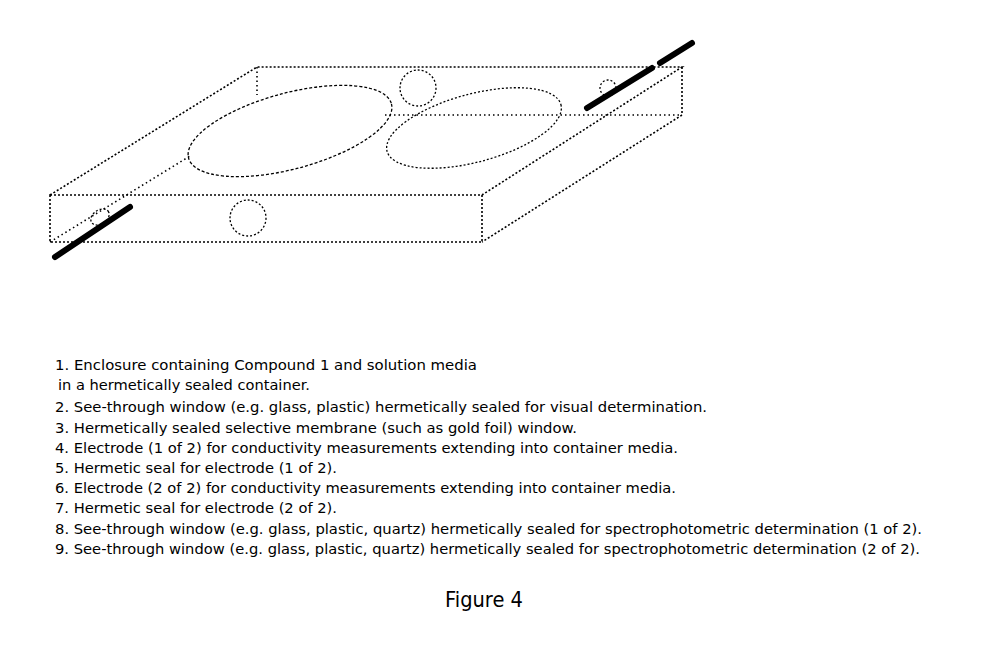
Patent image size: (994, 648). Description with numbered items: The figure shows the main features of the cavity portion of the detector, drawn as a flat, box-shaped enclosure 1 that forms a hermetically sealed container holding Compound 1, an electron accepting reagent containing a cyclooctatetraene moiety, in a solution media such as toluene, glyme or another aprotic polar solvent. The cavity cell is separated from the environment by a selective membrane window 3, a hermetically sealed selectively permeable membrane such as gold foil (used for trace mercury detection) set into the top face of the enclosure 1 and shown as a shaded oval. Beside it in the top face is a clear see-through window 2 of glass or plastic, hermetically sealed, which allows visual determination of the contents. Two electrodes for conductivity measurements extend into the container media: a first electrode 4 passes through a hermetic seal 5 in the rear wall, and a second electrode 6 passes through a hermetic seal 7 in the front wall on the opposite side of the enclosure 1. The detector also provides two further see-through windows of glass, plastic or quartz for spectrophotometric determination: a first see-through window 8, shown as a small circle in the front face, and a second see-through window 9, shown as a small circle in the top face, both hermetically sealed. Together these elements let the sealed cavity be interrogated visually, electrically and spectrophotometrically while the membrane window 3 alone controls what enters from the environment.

The enclosure 1 is at (540, 224).
The see-through window 2 is at (457, 88).
The selective membrane window 3 is at (315, 82).
The electrode 4 is at (659, 42).
The hermetic seal 5 is at (599, 73).
The electrode 6 is at (70, 258).
The hermetic seal 7 is at (116, 242).
The see-through window 8 is at (248, 246).
The see-through window 9 is at (405, 60).